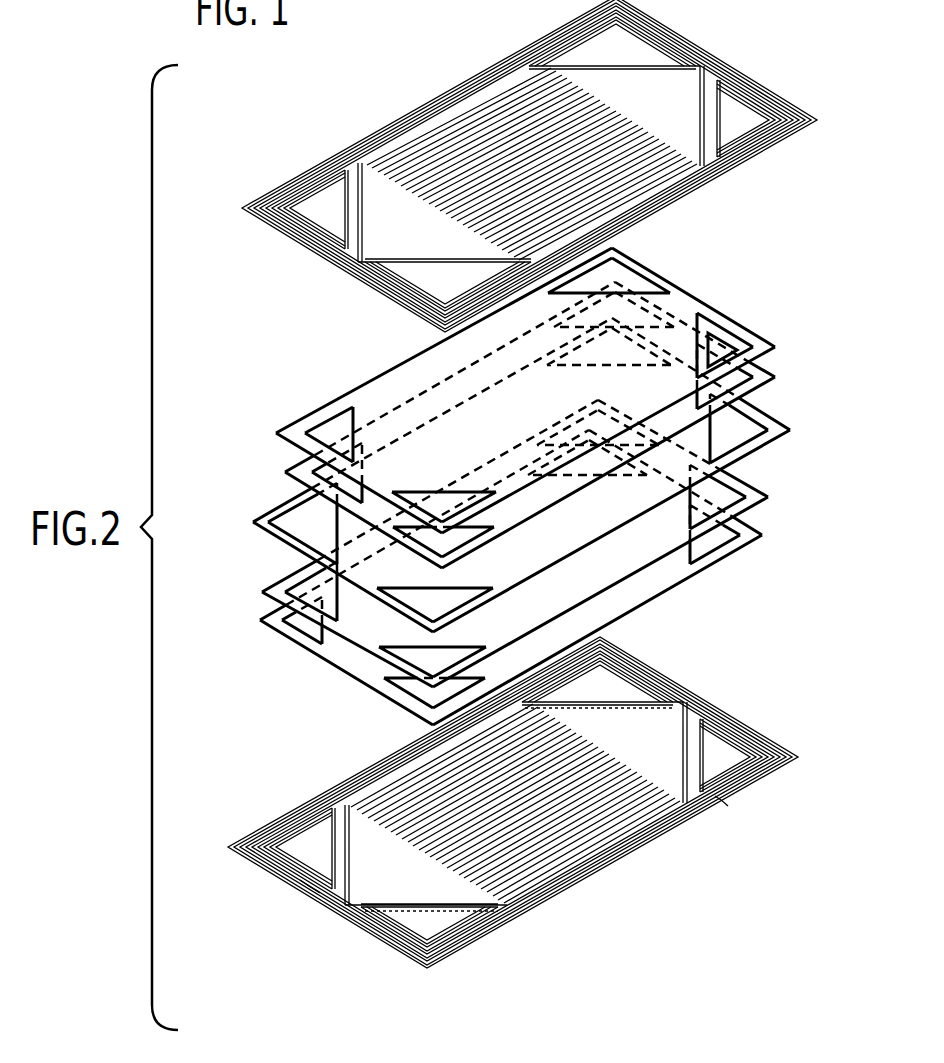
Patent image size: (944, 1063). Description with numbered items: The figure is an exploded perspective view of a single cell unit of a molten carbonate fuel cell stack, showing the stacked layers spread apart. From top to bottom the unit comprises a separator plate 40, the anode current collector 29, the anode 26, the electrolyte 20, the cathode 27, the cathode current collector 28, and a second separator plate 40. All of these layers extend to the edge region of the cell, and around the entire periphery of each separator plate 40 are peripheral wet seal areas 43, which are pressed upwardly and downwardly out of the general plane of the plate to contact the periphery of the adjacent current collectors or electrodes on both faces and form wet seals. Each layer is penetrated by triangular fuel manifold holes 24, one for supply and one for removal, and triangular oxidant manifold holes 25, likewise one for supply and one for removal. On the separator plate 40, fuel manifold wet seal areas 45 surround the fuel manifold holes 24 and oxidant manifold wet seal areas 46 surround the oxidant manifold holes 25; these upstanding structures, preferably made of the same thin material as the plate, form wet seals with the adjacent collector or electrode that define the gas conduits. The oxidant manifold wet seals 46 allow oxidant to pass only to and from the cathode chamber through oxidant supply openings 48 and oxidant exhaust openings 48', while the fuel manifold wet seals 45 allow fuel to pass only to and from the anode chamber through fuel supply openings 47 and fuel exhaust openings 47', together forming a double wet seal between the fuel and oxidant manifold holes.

The electrolyte 20 is at (773, 413).
The fuel manifold holes 24 is at (748, 122).
The oxidant manifold holes 25 is at (627, 50).
The anode 26 is at (770, 368).
The cathode 27 is at (750, 500).
The cathode current collector 28 is at (727, 553).
The anode current collector 29 is at (700, 303).
The separator plate 40 is at (725, 178).
The peripheral wet seal areas 43 is at (407, 128).
The fuel manifold wet seal areas 45 is at (782, 100).
The oxidant manifold wet seal areas 46 is at (602, 36).
The fuel supply openings 47 is at (280, 923).
The fuel exhaust openings 47' is at (740, 818).
The oxidant supply openings 48 is at (474, 926).
The oxidant exhaust openings 48' is at (688, 701).